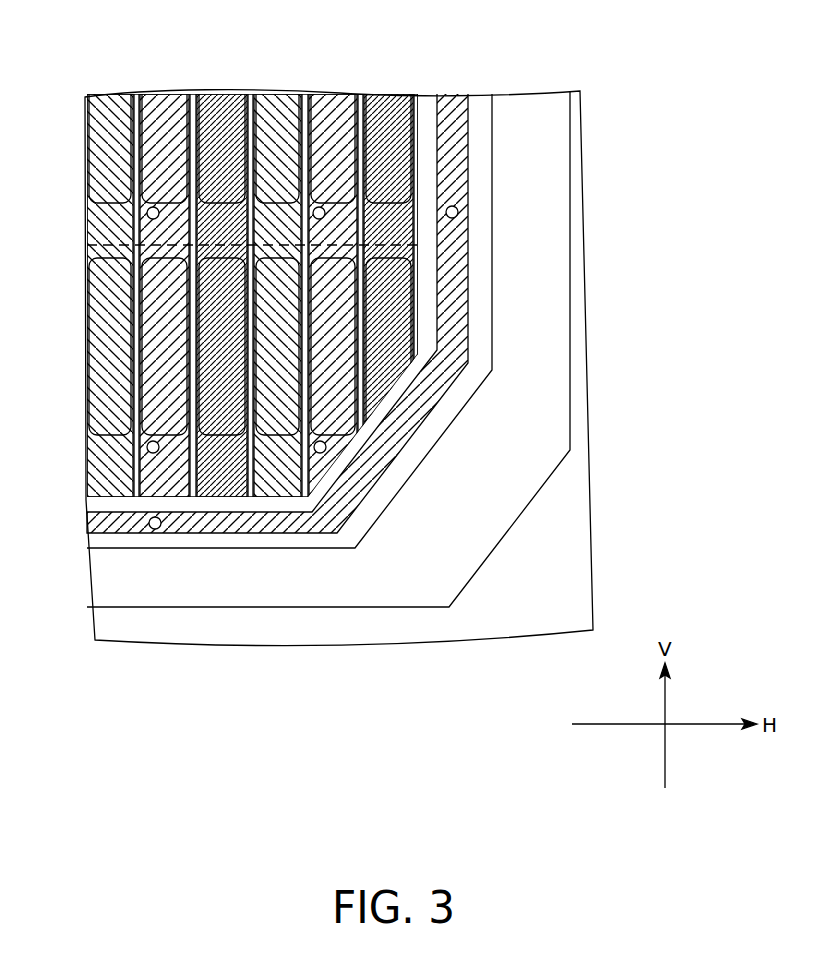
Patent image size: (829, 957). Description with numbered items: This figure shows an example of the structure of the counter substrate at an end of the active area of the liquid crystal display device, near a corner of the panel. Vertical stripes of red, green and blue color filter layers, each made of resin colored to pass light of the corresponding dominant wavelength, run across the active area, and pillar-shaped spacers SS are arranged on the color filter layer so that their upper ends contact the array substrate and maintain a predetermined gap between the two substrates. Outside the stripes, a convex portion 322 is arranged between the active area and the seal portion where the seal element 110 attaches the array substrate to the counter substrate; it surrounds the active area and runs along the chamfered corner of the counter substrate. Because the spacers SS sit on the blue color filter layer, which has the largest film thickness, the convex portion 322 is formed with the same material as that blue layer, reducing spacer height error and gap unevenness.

The convex portion 322 is at (452, 102).
The seal element 110 is at (560, 148).
The pillar-shaped spacer SS is at (318, 207).